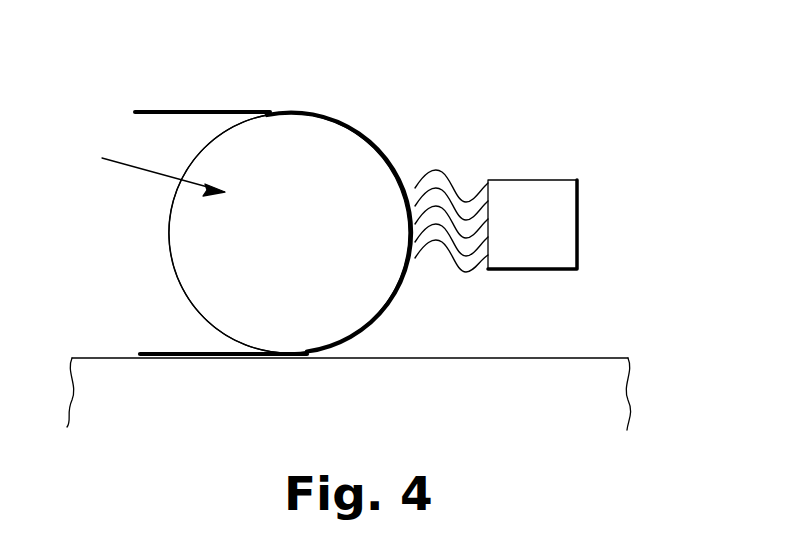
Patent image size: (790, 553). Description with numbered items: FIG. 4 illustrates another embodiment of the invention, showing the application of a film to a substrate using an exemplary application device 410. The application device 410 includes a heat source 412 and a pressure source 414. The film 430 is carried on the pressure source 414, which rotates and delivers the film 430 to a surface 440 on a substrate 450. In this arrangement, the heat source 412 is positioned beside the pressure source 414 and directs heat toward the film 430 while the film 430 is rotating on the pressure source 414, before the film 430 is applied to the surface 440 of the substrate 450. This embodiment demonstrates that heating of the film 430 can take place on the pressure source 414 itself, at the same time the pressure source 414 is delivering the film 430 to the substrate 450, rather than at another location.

The application device 410 is at (293, 97).
The heat source 412 is at (535, 192).
The pressure source 414 is at (210, 285).
The film 430 is at (197, 111).
The surface 440 is at (423, 358).
The substrate 450 is at (595, 385).